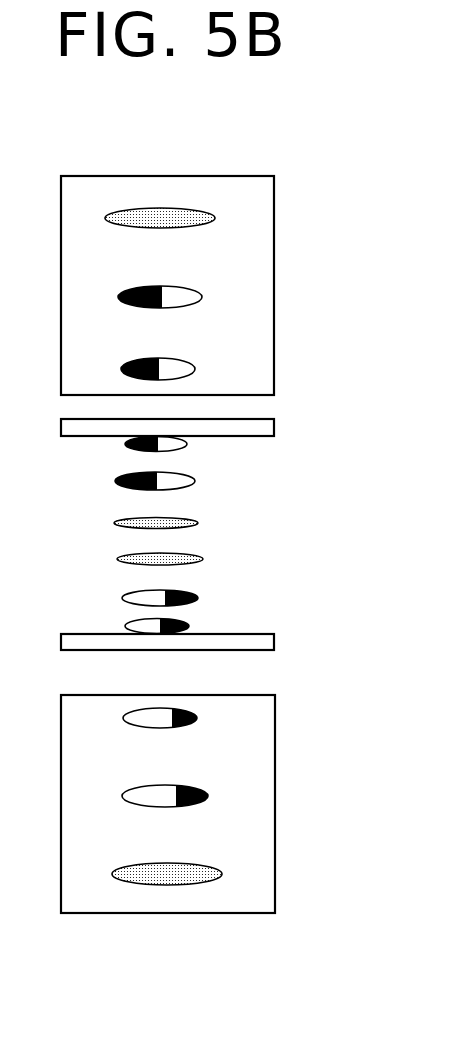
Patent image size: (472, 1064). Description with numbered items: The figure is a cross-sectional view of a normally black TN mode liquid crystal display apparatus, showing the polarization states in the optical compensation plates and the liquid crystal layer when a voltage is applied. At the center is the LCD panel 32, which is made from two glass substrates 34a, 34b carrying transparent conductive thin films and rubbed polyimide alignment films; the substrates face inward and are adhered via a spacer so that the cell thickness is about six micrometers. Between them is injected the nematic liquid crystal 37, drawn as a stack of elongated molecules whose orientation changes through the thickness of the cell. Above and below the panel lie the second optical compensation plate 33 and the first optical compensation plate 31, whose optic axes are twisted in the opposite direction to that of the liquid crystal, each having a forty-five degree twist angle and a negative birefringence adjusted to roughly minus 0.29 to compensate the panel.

The first optical compensation plate 31 is at (275, 770).
The LCD panel 32 is at (235, 533).
The second optical compensation plate 33 is at (275, 282).
The glass substrate 34a is at (260, 642).
The glass substrate 34b is at (257, 437).
The nematic liquid crystal 37 is at (198, 594).